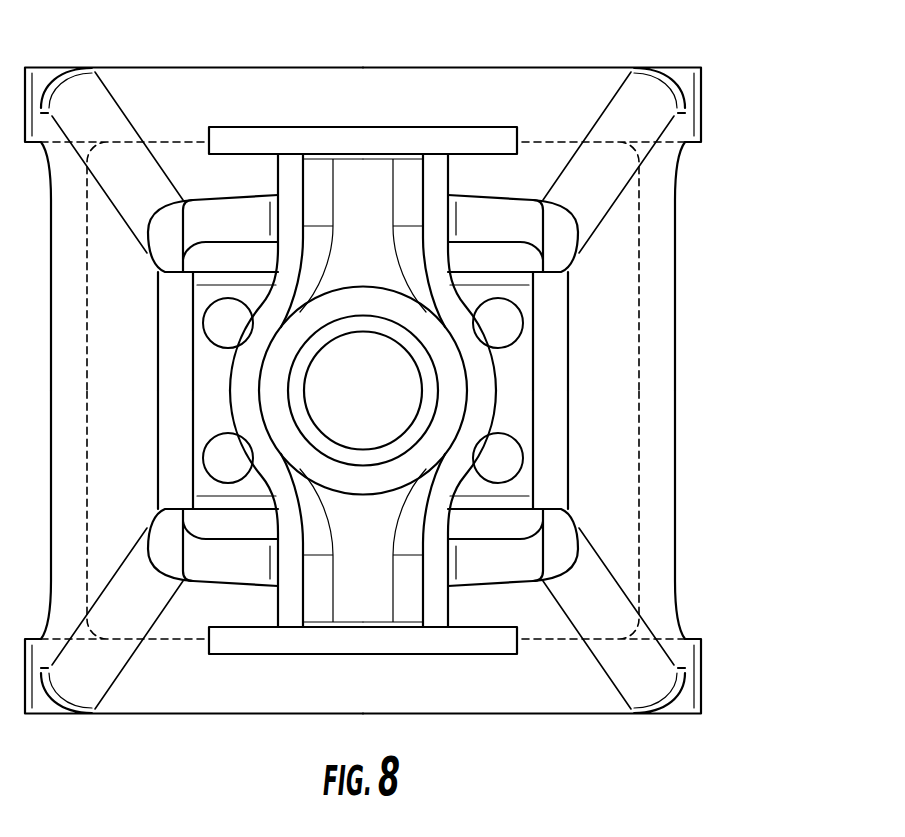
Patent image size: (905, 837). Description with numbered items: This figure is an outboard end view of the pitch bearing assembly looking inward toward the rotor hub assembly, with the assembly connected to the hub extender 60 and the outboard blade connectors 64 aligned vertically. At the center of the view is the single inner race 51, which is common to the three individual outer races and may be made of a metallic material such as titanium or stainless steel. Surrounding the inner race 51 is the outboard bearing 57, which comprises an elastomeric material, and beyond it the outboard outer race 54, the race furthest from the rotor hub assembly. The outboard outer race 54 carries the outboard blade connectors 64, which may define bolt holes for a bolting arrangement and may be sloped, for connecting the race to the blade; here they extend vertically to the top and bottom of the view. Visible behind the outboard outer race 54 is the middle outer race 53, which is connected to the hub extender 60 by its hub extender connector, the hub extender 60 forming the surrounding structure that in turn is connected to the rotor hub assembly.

The inner race 51 is at (420, 428).
The middle outer race 53 is at (513, 390).
The outboard outer race 54 is at (480, 366).
The outboard bearing 57 is at (448, 407).
The hub extender 60 is at (660, 184).
The outboard blade connectors 64 is at (473, 140).